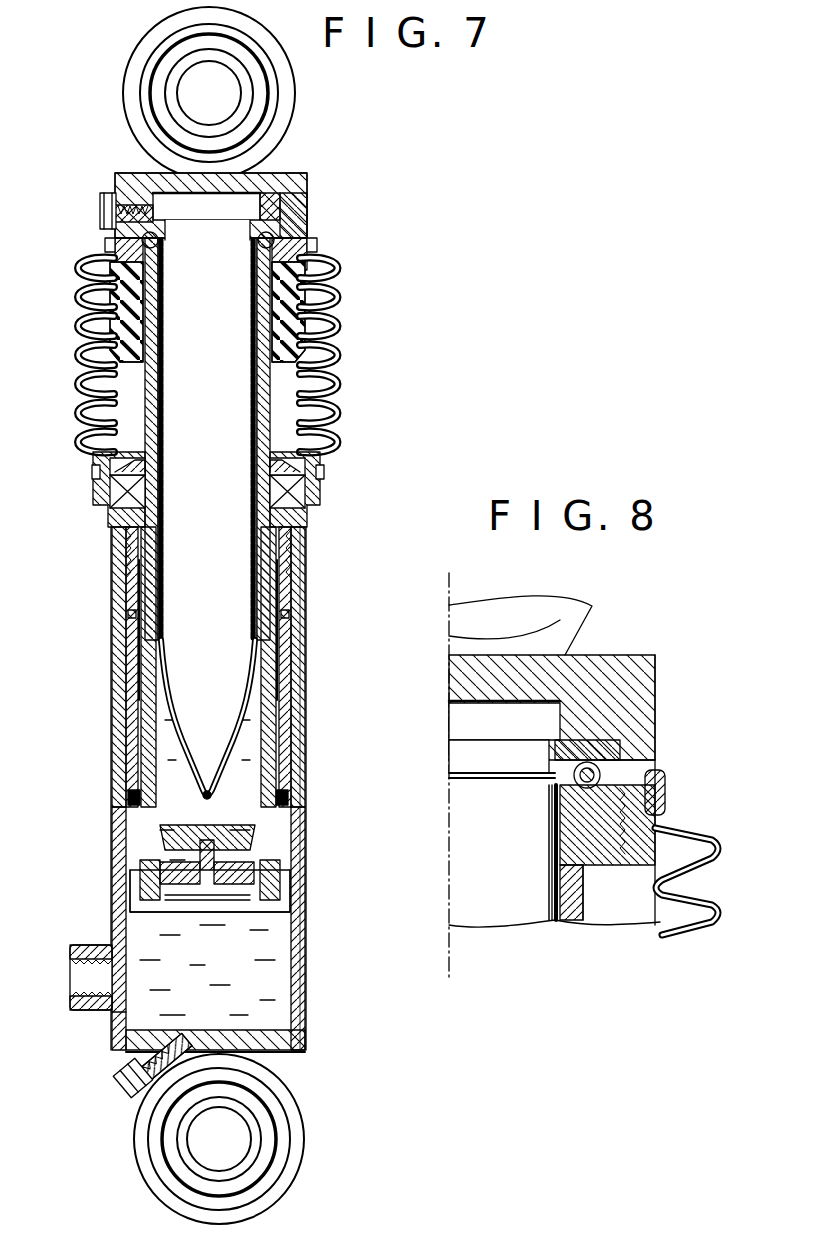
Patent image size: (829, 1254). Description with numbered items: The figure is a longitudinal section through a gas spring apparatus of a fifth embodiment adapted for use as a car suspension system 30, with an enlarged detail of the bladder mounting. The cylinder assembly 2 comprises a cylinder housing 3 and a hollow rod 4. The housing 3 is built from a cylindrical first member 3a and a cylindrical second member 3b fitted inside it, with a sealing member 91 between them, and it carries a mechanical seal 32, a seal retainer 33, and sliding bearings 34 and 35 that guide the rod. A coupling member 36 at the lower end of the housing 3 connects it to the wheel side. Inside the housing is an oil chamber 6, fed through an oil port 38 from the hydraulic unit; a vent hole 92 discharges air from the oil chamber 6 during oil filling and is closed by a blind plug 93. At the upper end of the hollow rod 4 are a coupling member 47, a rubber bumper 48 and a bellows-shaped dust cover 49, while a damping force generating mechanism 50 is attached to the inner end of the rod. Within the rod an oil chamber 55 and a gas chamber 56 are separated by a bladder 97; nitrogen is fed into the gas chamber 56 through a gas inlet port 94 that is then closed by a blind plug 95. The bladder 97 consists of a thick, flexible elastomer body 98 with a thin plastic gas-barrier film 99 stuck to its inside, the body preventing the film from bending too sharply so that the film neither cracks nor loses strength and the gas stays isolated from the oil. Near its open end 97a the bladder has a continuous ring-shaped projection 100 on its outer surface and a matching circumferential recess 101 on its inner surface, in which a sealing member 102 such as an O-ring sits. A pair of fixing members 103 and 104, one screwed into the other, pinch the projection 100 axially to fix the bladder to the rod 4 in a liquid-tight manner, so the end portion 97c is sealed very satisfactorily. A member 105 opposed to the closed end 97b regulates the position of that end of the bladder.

In FIG. 7, the cylinder assembly 2 is at (308, 913).
In FIG. 7, the cylinder housing 3 is at (308, 680).
In FIG. 7, the cylindrical first member 3a is at (309, 762).
In FIG. 7, the cylindrical second member 3b is at (285, 645).
In FIG. 7, the hollow rod 4 is at (268, 423).
In FIG. 8, the hollow rod 4 is at (576, 920).
In FIG. 7, the oil chamber 6 is at (120, 1030).
In FIG. 7, the car suspension system 30 is at (335, 150).
In FIG. 8, the car suspension system 30 is at (552, 790).
In FIG. 7, the mechanical seal 32 is at (312, 490).
In FIG. 7, the seal retainer 33 is at (322, 472).
In FIG. 7, the sliding bearing 34 is at (290, 555).
In FIG. 7, the sliding bearing 35 is at (272, 705).
In FIG. 7, the coupling member 36 is at (312, 1150).
In FIG. 7, the oil port 38 is at (76, 976).
In FIG. 7, the coupling member 47 is at (124, 74).
In FIG. 7, the rubber bumper 48 is at (112, 318).
In FIG. 7, the dust cover 49 is at (90, 410).
In FIG. 8, the dust cover 49 is at (706, 842).
In FIG. 7, the damping force generating mechanism 50 is at (185, 907).
In FIG. 7, the oil chamber 55 is at (135, 790).
In FIG. 7, the gas chamber 56 is at (180, 648).
In FIG. 7, the sealing member 91 is at (289, 613).
In FIG. 7, the vent hole 92 is at (125, 1057).
In FIG. 7, the blind plug 93 is at (112, 1080).
In FIG. 7, the gas inlet port 94 is at (125, 210).
In FIG. 7, the blind plug 95 is at (100, 212).
In FIG. 7, the bladder 97 is at (172, 730).
In FIG. 8, the bladder 97 is at (550, 925).
In FIG. 7, the open end 97a is at (160, 198).
In FIG. 8, the open end 97a is at (455, 737).
In FIG. 7, the closed end 97b is at (200, 797).
In FIG. 8, the end portion 97c is at (648, 770).
In FIG. 7, the elastomer body 98 is at (166, 562).
In FIG. 8, the elastomer body 98 is at (555, 848).
In FIG. 7, the plastic gas-barrier film 99 is at (166, 516).
In FIG. 8, the plastic gas-barrier film 99 is at (552, 890).
In FIG. 7, the projection 100 is at (266, 212).
In FIG. 8, the projection 100 is at (600, 765).
In FIG. 8, the recess 101 is at (570, 775).
In FIG. 7, the sealing member 102 is at (275, 238).
In FIG. 8, the sealing member 102 is at (590, 760).
In FIG. 7, the fixing member 103 is at (295, 215).
In FIG. 8, the fixing member 103 is at (565, 730).
In FIG. 7, the fixing member 104 is at (295, 256).
In FIG. 8, the fixing member 104 is at (590, 815).
In FIG. 7, the member for regulating the position of the closed end 105 is at (165, 838).